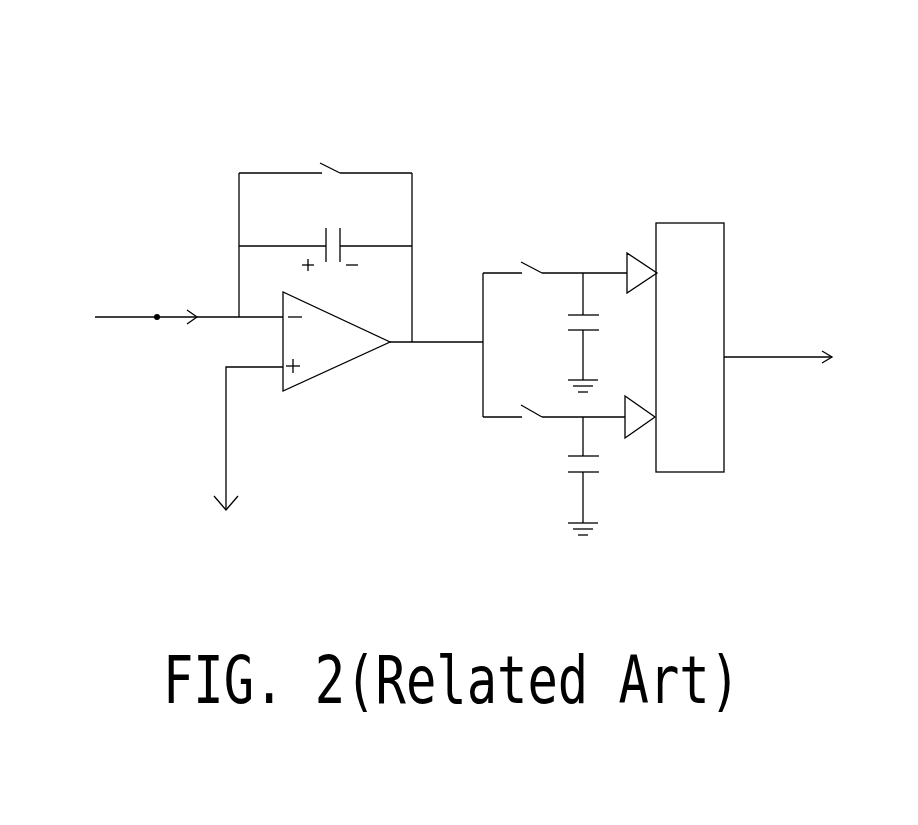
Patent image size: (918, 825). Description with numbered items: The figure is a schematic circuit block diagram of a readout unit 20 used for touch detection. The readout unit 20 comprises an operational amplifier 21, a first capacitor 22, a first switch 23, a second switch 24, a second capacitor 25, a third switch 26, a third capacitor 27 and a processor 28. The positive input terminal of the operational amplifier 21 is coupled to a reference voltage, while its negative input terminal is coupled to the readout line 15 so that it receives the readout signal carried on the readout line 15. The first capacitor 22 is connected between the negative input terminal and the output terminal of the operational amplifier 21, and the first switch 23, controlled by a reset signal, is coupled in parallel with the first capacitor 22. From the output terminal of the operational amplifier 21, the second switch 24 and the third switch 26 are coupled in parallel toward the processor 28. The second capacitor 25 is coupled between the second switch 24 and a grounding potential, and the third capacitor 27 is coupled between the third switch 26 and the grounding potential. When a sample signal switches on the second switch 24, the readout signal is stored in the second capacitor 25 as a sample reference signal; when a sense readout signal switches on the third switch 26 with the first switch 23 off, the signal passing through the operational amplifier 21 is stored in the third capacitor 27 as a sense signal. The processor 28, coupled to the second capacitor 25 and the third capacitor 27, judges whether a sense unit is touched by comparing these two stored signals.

The readout unit 20 is at (488, 52).
The readout line 15 is at (117, 317).
The operational amplifier 21 is at (332, 365).
The first capacitor 22 is at (325, 233).
The first switch 23 is at (333, 168).
The second switch 24 is at (527, 267).
The second capacitor 25 is at (593, 310).
The third switch 26 is at (530, 421).
The third capacitor 27 is at (585, 473).
The processor 28 is at (713, 445).